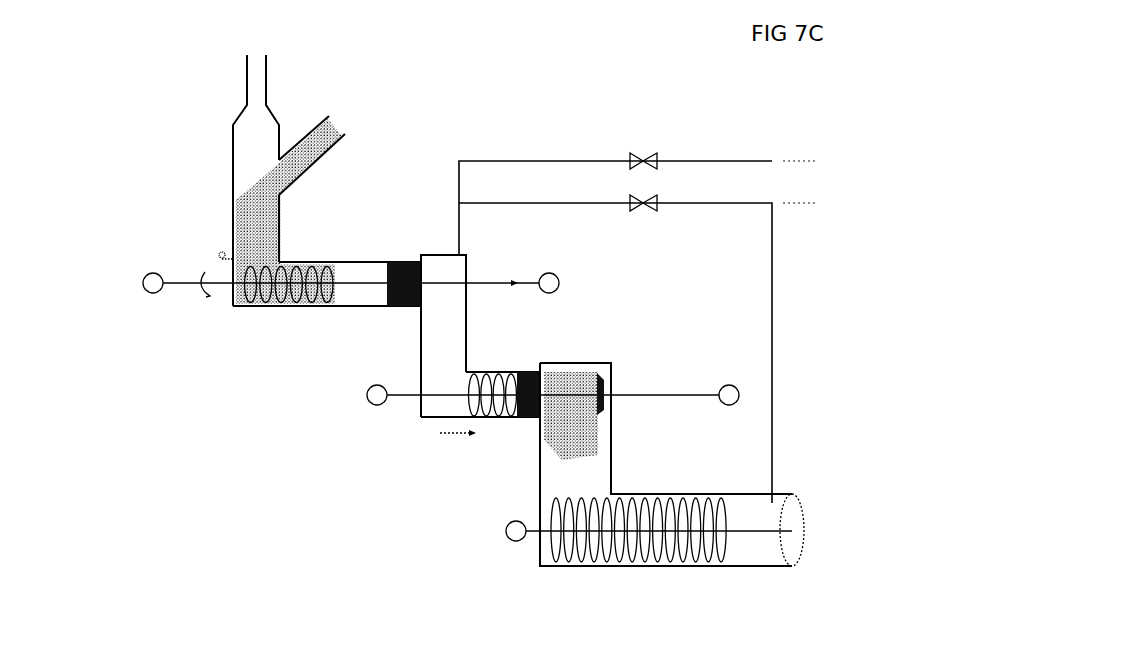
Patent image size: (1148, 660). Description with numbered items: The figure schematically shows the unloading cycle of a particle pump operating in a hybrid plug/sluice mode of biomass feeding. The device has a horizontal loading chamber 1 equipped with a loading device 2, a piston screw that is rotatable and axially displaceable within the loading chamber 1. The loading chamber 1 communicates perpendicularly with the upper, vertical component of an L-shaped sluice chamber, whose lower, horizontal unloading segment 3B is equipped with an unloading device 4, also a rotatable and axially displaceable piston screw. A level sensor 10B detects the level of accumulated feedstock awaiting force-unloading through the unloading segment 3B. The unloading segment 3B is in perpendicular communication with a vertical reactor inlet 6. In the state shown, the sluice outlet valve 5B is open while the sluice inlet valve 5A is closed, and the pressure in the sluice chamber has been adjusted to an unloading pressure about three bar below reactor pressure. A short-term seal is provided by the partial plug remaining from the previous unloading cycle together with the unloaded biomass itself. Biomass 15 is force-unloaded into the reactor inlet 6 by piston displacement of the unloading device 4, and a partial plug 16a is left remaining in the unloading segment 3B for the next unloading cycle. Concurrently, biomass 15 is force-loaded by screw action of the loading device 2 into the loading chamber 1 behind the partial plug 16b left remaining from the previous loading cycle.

The loading chamber 1 is at (360, 274).
The loading device (piston screw) 2 is at (186, 288).
The unloading segment of sluice chamber 3B is at (427, 405).
The unloading device (piston screw) 4 is at (399, 398).
The sluice inlet valve 5A is at (513, 280).
The sluice outlet valve 5B is at (652, 391).
The reactor inlet 6 is at (594, 376).
The level sensor 10B is at (409, 364).
The biomass 15 is at (277, 226).
The partial plug 16a is at (523, 421).
The partial plug 16b is at (386, 286).